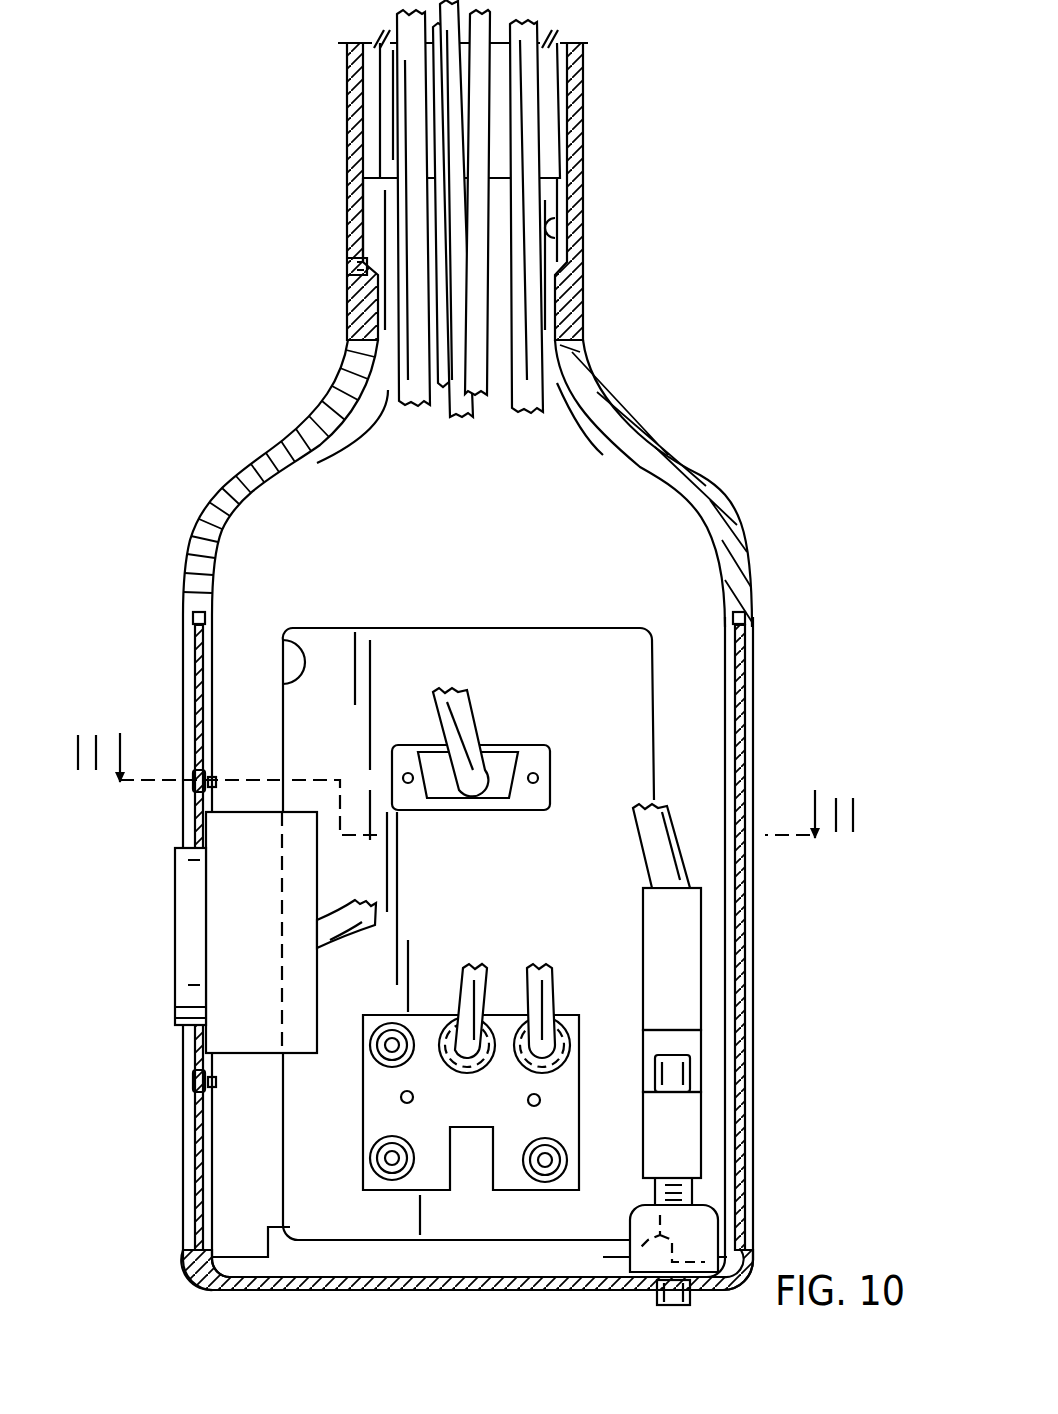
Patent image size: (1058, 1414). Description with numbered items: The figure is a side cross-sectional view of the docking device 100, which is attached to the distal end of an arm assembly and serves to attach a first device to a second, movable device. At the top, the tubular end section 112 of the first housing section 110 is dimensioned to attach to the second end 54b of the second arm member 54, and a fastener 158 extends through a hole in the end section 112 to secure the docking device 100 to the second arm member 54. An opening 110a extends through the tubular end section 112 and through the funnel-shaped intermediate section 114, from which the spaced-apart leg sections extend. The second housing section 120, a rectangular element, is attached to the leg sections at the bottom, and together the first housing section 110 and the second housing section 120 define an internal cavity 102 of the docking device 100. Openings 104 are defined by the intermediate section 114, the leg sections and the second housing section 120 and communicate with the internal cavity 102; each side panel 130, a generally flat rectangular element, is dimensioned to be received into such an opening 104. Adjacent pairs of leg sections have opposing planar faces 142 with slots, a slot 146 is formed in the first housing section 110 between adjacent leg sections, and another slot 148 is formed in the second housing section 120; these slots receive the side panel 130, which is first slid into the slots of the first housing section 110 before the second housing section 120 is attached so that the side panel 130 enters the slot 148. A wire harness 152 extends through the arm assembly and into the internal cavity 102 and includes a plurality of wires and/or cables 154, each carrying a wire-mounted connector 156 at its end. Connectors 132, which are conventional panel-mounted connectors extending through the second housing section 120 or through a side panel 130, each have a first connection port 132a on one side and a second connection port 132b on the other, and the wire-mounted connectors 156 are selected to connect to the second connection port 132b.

The second arm member 54 is at (588, 70).
The second end of second arm member 54b is at (584, 150).
The docking device 100 is at (772, 286).
The internal cavity 102 is at (355, 577).
The opening 104 is at (292, 628).
The first housing section 110 is at (706, 472).
The opening 110a is at (573, 216).
The tubular end section 112 is at (562, 258).
The intermediate section 114 is at (645, 437).
The second housing section 120 is at (385, 1290).
The side panel 130 is at (595, 627).
The connector 132 is at (174, 946).
The first connection port 132a is at (178, 915).
The second connection port 132b is at (525, 745).
The planar face 142 is at (715, 932).
The slot 146 is at (198, 613).
The slot 148 is at (218, 1248).
The wire harness 152 is at (392, 107).
The wire and/or cable 154 is at (520, 133).
The wire-mounted connector 156 is at (492, 790).
The fastener 158 is at (350, 268).